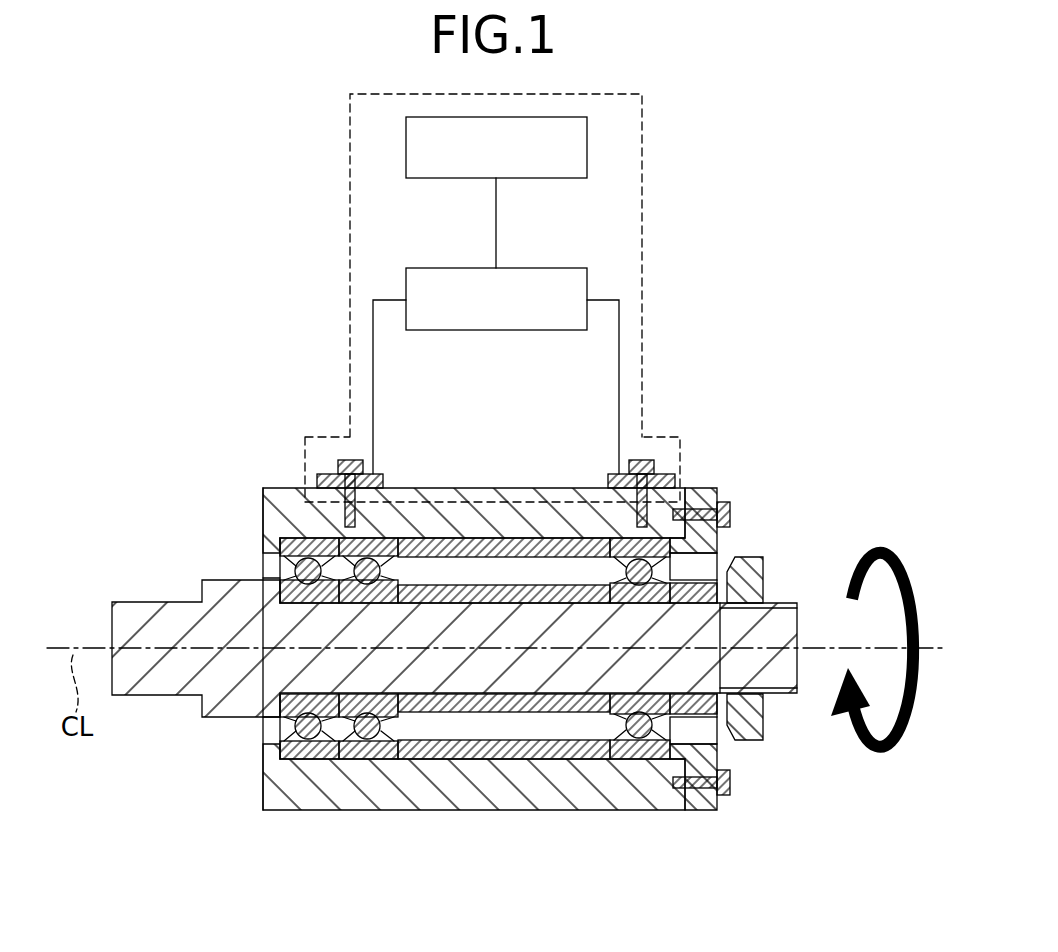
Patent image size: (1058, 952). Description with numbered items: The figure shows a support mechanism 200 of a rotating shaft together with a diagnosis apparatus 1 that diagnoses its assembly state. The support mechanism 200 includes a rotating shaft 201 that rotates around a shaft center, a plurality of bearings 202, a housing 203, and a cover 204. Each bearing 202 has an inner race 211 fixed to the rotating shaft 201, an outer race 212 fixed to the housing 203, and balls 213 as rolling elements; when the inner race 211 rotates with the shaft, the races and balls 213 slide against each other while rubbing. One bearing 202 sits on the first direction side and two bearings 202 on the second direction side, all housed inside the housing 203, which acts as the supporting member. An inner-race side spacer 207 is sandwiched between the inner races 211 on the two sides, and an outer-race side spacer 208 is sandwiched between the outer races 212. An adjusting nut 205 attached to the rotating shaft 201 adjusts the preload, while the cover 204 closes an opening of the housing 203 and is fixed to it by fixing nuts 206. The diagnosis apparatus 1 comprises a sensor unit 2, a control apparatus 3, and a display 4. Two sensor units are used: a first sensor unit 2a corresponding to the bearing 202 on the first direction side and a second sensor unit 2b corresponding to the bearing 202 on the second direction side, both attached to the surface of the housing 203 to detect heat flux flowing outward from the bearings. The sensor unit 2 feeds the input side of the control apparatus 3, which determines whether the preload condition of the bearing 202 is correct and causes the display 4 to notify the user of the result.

The diagnosis apparatus 1 is at (346, 130).
The sensor unit 2 is at (325, 466).
The first sensor unit 2a is at (676, 476).
The second sensor unit 2b is at (316, 476).
The control apparatus 3 is at (587, 282).
The display 4 is at (587, 128).
The support mechanism 200 is at (230, 440).
The rotating shaft 201 is at (160, 697).
The bearing 202 is at (296, 752).
The housing 203 is at (520, 812).
The cover 204 is at (720, 540).
The adjusting nut 205 is at (766, 574).
The fixing nut 206 is at (733, 504).
The inner-race side spacer 207 is at (470, 708).
The outer-race side spacer 208 is at (428, 754).
The inner race 211 is at (659, 720).
The outer race 212 is at (618, 754).
The balls 213 is at (640, 742).